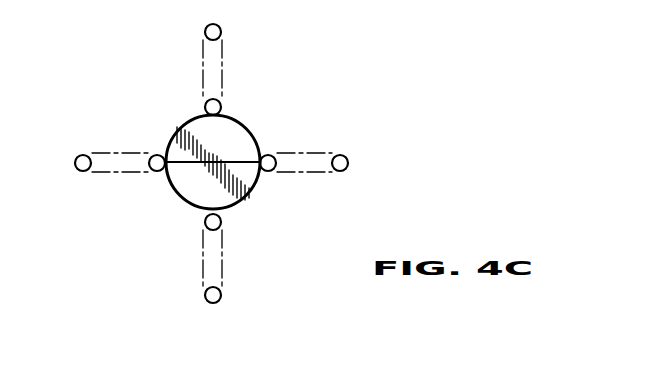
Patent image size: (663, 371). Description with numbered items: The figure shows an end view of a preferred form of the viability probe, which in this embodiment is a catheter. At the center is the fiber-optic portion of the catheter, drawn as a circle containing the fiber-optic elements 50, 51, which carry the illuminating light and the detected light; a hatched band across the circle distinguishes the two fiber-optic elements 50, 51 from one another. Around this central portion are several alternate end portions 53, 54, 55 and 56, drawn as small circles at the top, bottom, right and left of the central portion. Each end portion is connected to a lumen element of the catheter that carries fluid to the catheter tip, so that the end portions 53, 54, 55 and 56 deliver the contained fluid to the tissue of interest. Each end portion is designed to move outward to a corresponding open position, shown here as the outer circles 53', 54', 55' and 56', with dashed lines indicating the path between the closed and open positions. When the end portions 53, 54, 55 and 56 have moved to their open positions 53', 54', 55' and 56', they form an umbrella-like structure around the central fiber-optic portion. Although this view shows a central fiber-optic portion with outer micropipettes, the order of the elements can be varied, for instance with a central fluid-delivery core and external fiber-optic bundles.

The fiber-optic element 50 is at (197, 133).
The fiber-optic element 51 is at (232, 183).
The end portion 53 is at (244, 92).
The open position 53' is at (185, 49).
The end portion 54 is at (240, 238).
The open position 54' is at (184, 277).
The end portion 55 is at (294, 143).
The open position 55' is at (343, 151).
The end portion 56 is at (138, 184).
The open position 56' is at (86, 148).